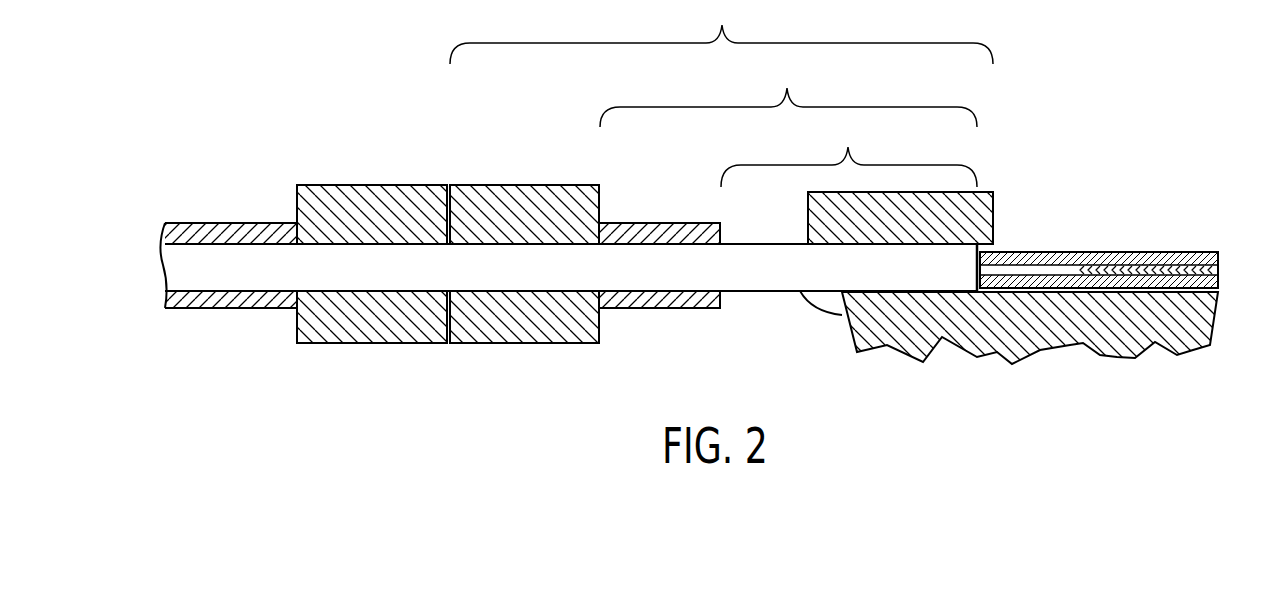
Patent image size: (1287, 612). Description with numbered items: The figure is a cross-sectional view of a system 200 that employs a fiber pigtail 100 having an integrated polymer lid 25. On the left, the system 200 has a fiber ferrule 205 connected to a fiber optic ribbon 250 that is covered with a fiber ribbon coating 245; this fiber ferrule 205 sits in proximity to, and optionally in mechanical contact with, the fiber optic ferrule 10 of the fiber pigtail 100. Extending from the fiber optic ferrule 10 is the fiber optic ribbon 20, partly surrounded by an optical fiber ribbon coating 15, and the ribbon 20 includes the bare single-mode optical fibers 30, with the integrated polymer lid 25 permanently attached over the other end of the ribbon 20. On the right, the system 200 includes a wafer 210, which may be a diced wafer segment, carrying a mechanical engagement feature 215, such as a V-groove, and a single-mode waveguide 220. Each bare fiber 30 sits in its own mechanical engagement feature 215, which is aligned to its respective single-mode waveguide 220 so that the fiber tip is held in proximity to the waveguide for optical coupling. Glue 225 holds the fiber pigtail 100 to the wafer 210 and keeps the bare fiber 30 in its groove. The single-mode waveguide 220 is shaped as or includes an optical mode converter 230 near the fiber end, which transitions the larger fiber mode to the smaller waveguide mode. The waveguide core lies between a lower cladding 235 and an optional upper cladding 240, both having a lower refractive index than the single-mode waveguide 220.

The fiber pigtail 100 is at (721, 32).
The fiber optic ribbon 20 is at (788, 92).
The bare single-mode optical fibers 30 is at (849, 152).
The system 200 is at (1177, 97).
The fiber optic ribbon 250 is at (203, 267).
The fiber ribbon coating 245 is at (203, 298).
The fiber ferrule 205 is at (358, 332).
The fiber optic ferrule 10 is at (472, 333).
The optical fiber ribbon coating 15 is at (660, 298).
The integrated polymer lid 25 is at (978, 207).
The glue 225 is at (998, 248).
The single-mode waveguide 220 is at (1218, 258).
The upper cladding 240 is at (1190, 260).
The optical mode converter 230 is at (1042, 270).
The lower cladding 235 is at (1193, 285).
The wafer 210 is at (1198, 333).
The mechanical engagement feature 215 is at (889, 300).